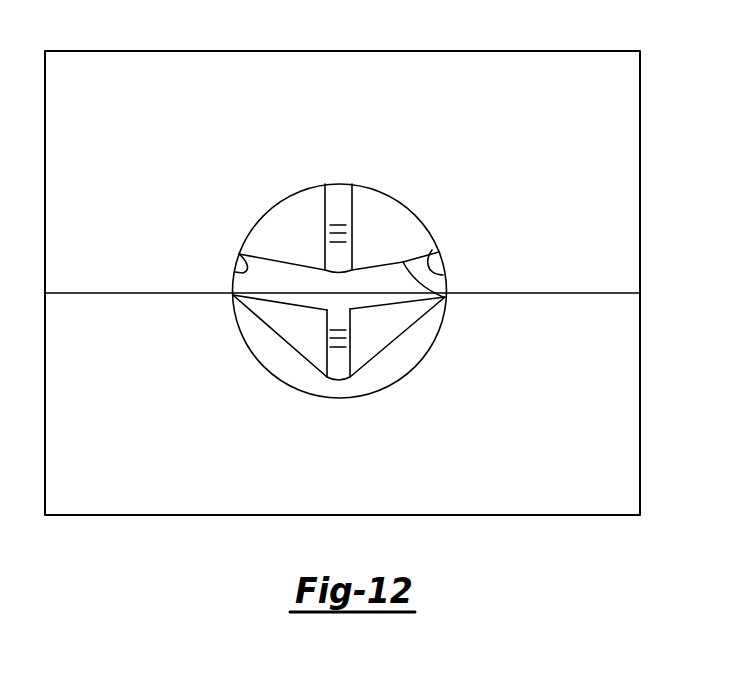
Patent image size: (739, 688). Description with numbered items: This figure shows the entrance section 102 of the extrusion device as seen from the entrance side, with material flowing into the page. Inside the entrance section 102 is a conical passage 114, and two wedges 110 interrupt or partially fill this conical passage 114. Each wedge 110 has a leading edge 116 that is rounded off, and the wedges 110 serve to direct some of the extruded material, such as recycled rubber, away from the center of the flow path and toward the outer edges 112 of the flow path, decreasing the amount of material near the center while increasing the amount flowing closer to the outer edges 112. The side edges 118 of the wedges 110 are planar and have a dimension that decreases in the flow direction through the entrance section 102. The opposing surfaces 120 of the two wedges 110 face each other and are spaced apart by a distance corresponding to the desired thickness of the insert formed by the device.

The entrance section 102 is at (564, 49).
The wedge 110 is at (380, 216).
The outer edges 112 is at (239, 254).
The conical passage 114 is at (290, 287).
The leading edge 116 is at (341, 202).
The side edges 118 is at (287, 223).
The opposing surfaces 120 is at (443, 299).